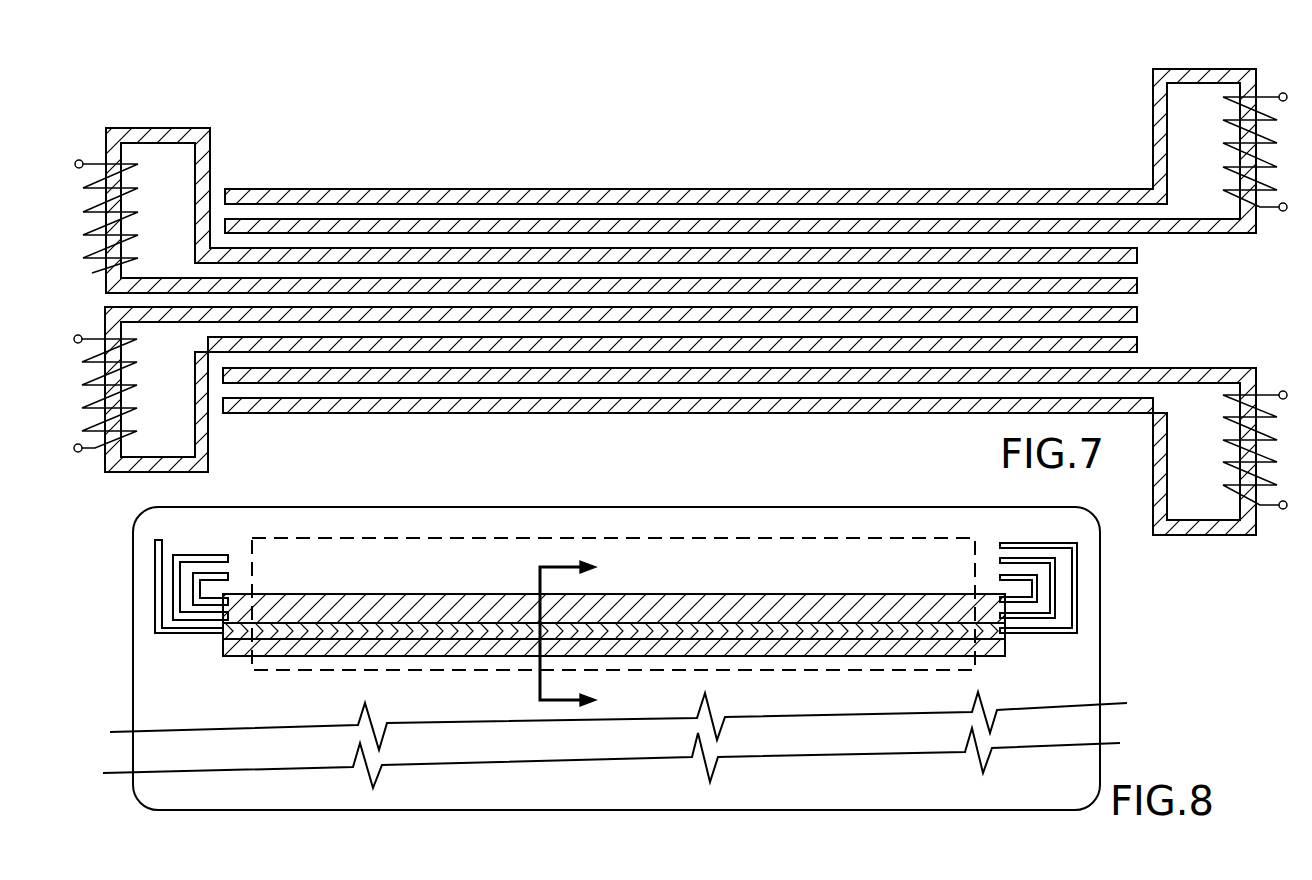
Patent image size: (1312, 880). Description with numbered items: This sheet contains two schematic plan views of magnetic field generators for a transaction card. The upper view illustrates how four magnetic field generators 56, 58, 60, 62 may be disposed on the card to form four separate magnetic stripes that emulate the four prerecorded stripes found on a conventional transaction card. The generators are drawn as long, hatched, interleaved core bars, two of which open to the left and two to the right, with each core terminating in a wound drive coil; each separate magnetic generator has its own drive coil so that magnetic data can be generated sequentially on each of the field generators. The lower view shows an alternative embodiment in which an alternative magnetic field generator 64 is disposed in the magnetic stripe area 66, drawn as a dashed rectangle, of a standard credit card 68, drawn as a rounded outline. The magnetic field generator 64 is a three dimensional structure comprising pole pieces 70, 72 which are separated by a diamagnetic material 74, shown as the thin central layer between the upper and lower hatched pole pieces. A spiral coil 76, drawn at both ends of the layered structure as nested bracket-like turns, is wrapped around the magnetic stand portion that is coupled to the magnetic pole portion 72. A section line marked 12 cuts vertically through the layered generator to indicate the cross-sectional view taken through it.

In FIG. 8, the section line 12- 12 is at (589, 636).
In FIG. 7, the magnetic field generator 56 is at (1274, 220).
In FIG. 7, the magnetic field generator 58 is at (88, 150).
In FIG. 7, the magnetic field generator 60 is at (1273, 384).
In FIG. 7, the magnetic field generator 62 is at (84, 462).
In FIG. 8, the alternative magnetic field generator 64 is at (790, 680).
In FIG. 8, the magnetic stripe area 66 is at (828, 538).
In FIG. 8, the standard credit card 68 is at (1100, 670).
In FIG. 8, the pole piece 70 is at (350, 645).
In FIG. 8, the magnetic pole portion 72 is at (300, 597).
In FIG. 8, the diamagnetic material 74 is at (320, 628).
In FIG. 8, the spiral coil 76 is at (142, 578).